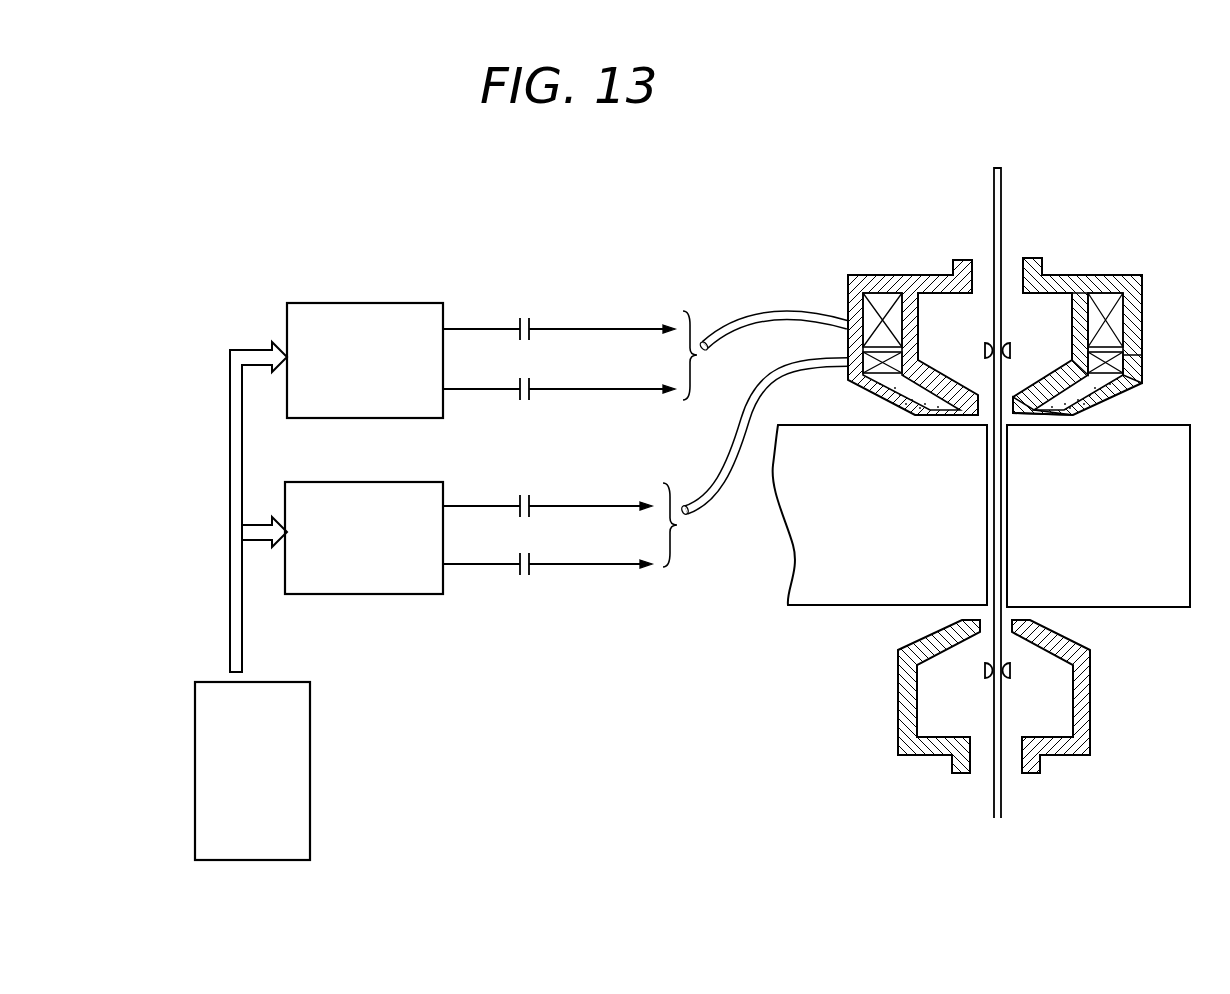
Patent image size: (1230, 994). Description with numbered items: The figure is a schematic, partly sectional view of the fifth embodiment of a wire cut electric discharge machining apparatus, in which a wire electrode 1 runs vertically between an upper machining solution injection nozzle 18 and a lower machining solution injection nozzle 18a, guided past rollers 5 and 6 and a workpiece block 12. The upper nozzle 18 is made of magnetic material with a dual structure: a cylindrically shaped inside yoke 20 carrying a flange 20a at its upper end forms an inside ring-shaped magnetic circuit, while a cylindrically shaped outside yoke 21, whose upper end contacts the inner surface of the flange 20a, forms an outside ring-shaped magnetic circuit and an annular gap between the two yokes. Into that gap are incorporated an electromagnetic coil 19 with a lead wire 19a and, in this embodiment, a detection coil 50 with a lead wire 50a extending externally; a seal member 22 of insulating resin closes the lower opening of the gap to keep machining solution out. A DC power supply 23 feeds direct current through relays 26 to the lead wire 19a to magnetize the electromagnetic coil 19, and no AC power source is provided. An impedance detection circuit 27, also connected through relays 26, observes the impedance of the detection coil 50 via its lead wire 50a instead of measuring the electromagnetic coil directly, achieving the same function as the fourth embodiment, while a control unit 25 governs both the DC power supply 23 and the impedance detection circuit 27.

The magnetic tape 1 is at (1002, 213).
The roller 5 is at (1010, 347).
The roller 6 is at (1008, 672).
The block 12 is at (1135, 609).
The upper machining solution injection nozzle 18 is at (898, 267).
The lower machining solution injection nozzle 18a is at (898, 718).
The electromagnetic coil 19 is at (1120, 313).
The lead wire 19a is at (756, 313).
The inside yoke 20 is at (1072, 321).
The flange 20a is at (1114, 322).
The outside yoke 21 is at (1136, 340).
The tip portion 22 is at (1062, 418).
The DC power supply 23 is at (403, 303).
The control unit 25 is at (283, 682).
The relay 26 is at (526, 316).
The impedance detection circuit 27 is at (396, 482).
The detection coil 50 is at (1143, 372).
The lead wire 50a is at (772, 385).